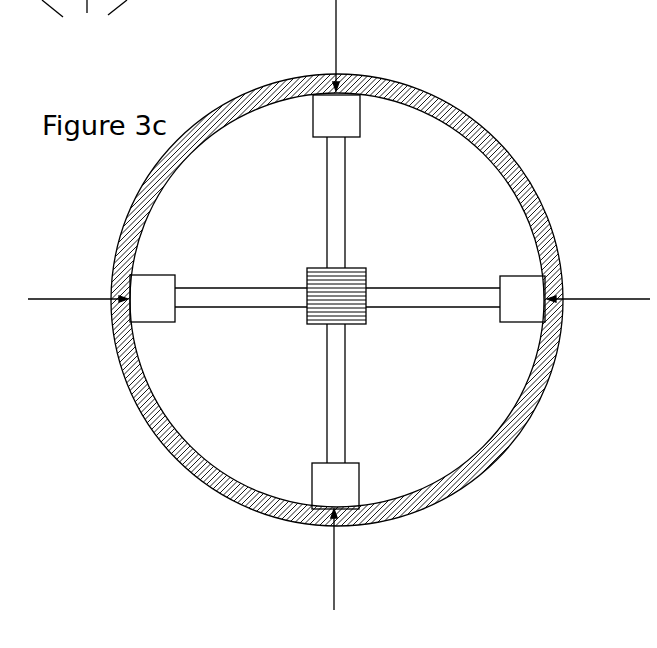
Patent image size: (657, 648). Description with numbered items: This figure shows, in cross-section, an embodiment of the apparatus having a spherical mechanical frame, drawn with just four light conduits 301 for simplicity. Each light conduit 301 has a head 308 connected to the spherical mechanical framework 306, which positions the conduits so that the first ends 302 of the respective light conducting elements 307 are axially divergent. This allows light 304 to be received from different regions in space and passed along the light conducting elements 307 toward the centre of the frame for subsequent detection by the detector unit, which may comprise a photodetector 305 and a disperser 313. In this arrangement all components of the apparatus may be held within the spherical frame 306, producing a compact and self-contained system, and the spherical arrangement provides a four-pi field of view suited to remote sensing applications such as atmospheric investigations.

The light conduit 301 is at (420, 378).
The first end 302 is at (285, 154).
The light 304 is at (337, 20).
The photodetector 305 is at (298, 320).
The disperser 313 is at (328, 309).
The mechanical framework 306 is at (495, 135).
The light conducting element 307 is at (335, 183).
The head 308 is at (153, 288).